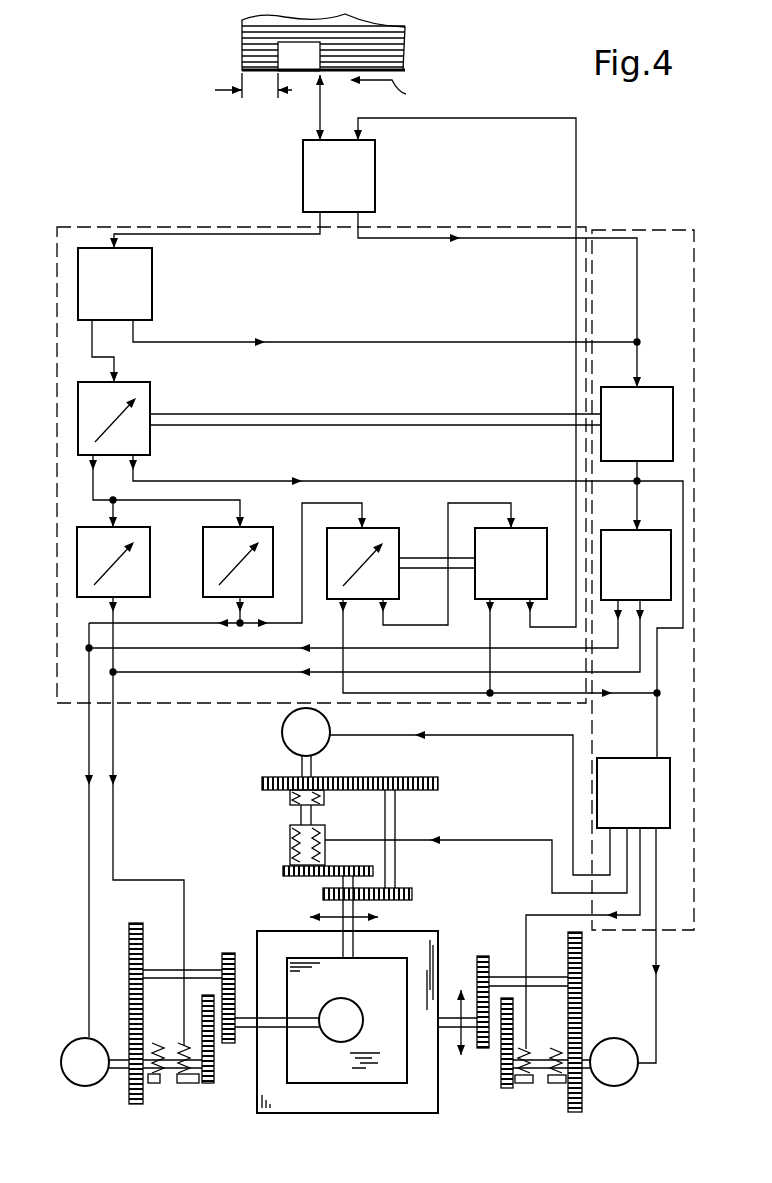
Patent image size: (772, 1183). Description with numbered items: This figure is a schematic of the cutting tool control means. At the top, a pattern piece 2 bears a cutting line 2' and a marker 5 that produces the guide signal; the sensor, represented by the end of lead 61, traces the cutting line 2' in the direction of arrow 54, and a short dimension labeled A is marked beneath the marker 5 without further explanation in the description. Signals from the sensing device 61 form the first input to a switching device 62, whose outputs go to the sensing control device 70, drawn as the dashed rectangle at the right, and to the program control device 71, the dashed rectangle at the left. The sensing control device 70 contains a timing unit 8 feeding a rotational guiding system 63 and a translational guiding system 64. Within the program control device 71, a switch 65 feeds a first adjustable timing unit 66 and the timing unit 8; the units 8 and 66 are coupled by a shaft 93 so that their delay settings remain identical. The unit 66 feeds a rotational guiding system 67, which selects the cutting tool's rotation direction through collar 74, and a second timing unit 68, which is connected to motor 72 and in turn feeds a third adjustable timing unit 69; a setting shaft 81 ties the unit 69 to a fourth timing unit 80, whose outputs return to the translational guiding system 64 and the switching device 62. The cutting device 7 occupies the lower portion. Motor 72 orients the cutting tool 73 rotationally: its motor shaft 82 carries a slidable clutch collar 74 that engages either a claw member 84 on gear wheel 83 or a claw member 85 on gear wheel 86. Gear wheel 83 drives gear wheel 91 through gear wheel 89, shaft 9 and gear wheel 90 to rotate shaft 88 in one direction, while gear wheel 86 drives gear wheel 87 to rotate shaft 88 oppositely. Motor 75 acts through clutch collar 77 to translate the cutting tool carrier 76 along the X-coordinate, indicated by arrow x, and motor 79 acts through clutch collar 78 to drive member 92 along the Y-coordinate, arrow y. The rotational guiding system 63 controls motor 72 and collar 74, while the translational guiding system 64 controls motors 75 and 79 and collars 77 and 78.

The pattern piece 2 is at (340, 42).
The marker 5 is at (300, 72).
The width of recess A is at (253, 90).
The arrow 54 is at (391, 92).
The cutting line 2' is at (346, 97).
The sensing device 61 is at (317, 128).
The switching device 62 is at (375, 180).
The program control device 71 is at (321, 436).
The sensing control device 70 is at (645, 552).
The switch 65 is at (152, 295).
The first adjustable timing unit 66 is at (150, 380).
The shaft 93 is at (312, 414).
The timing unit 8 is at (673, 415).
The rotational guiding system 67 is at (77, 545).
The second timing unit 68 is at (203, 567).
The third adjustable timing unit 69 is at (382, 528).
The setting shaft 81 is at (420, 558).
The fourth timing unit 80 is at (540, 528).
The rotational guiding system 63 is at (670, 572).
The translational guiding system 64 is at (670, 774).
The motor 75 is at (282, 735).
The clutch collar 77 is at (290, 842).
The gear wheel 90 is at (235, 955).
The member 92 is at (430, 931).
The gear wheel 89 is at (129, 950).
The shaft 9 is at (165, 970).
The gear wheel 87 is at (202, 1010).
The motor 72 is at (68, 1045).
The motor shaft 82 is at (115, 1058).
The gear wheel 83 is at (128, 1092).
The claw member 84 is at (153, 1083).
The slidable clutch collar 74 is at (188, 1083).
The claw member 85 is at (190, 1083).
The gear wheel 86 is at (212, 1083).
The gear wheel 91 is at (233, 1043).
The cutting tool 73 is at (358, 1010).
The shaft 88 is at (290, 1027).
The cutting tool carrier 76 is at (407, 1070).
The cutting device 7 is at (295, 1136).
The clutch collar 78 is at (525, 1083).
The motor 79 is at (620, 1086).
The X-coordinate x is at (328, 917).
The Y-coordinate y is at (461, 993).